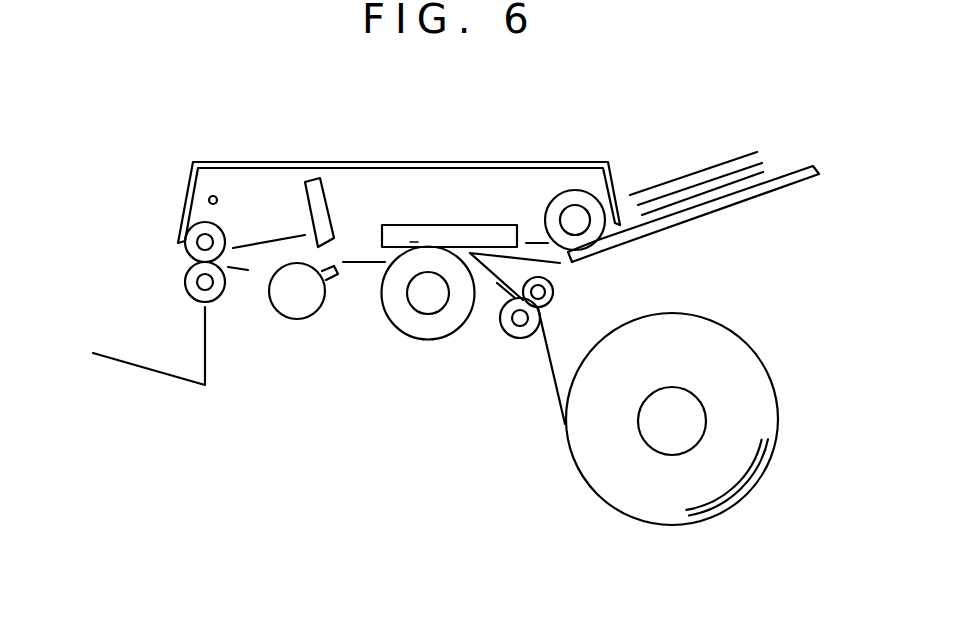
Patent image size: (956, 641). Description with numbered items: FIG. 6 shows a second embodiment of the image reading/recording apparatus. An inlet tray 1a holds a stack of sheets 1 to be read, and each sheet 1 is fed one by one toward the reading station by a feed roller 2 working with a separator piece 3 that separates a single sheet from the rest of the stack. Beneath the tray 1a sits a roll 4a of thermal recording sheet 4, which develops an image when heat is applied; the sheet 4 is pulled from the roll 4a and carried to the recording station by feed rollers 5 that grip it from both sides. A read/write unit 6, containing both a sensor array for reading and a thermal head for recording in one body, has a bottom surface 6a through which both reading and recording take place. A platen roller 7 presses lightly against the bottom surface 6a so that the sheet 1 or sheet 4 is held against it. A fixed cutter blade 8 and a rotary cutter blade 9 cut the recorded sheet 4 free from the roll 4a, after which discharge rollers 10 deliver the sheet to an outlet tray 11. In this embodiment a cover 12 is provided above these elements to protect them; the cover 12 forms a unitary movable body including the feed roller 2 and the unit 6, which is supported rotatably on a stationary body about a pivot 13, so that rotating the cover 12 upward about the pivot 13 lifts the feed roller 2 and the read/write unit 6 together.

The sheet 1 is at (737, 153).
The inlet tray 1a is at (767, 198).
The feed roller 2 is at (595, 193).
The separator piece 3 is at (607, 249).
The thermal recording sheet 4 is at (548, 340).
The roll 4a is at (763, 457).
The feed rollers 5 is at (527, 343).
The read/write unit 6 is at (481, 226).
The bottom surface 6a is at (413, 242).
The platen roller 7 is at (452, 340).
The fixed cutter blade 8 is at (331, 214).
The rotary cutter blade 9 is at (311, 320).
The discharge rollers 10 is at (213, 302).
The outlet tray 11 is at (172, 384).
The cover 12 is at (208, 161).
The pivot 13 is at (217, 200).